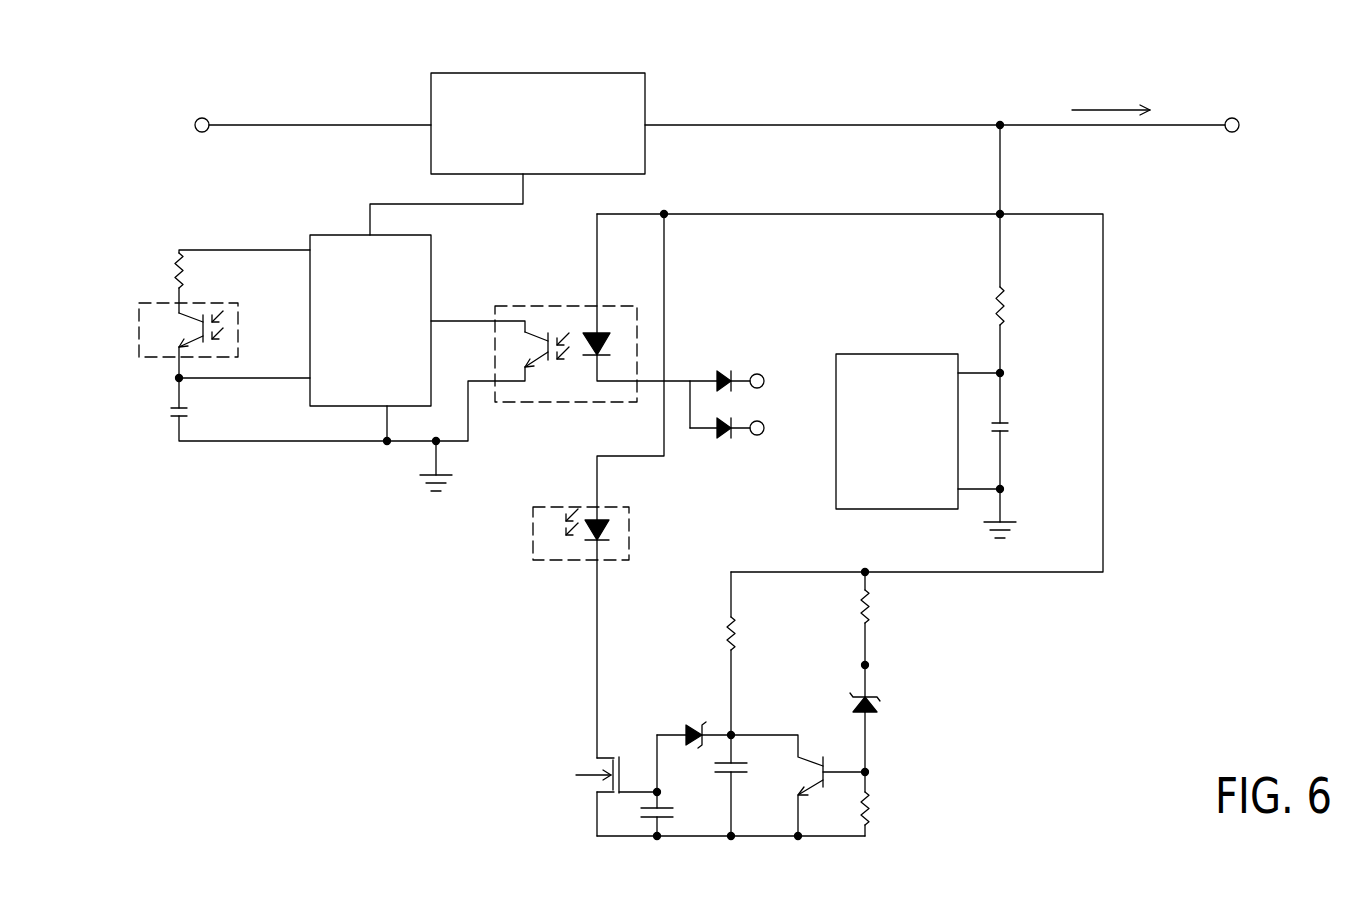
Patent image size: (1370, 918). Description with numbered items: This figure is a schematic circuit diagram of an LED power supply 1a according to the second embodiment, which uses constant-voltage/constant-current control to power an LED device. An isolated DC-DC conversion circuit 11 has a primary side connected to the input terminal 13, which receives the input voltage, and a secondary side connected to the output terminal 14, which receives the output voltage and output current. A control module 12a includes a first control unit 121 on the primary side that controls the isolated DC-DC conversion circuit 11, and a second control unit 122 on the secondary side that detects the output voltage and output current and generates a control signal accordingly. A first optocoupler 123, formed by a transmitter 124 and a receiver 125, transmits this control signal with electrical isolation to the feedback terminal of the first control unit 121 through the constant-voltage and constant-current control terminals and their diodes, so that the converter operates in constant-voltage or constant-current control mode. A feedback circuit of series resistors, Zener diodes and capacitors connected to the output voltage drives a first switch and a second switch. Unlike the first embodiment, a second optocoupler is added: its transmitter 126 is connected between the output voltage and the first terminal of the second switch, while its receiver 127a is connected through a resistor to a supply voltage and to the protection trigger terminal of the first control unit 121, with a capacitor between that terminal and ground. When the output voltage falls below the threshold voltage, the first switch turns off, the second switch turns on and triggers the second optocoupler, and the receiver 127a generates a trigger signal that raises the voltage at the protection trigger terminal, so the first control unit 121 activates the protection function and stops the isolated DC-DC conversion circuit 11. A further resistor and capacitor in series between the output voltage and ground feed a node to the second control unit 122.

The LED power supply 1a is at (1355, 83).
The isolated DC-DC conversion circuit 11 is at (522, 72).
The control module 12a is at (397, 682).
The input terminal 13 is at (204, 117).
The output terminal 14 is at (1226, 133).
The first control unit 121 is at (336, 233).
The second control unit 122 is at (888, 353).
The first optocoupler 123 is at (530, 403).
The transmitter 124 is at (592, 320).
The receiver 125 is at (535, 306).
The transmitter 126 is at (533, 546).
The receiver 127a is at (140, 318).